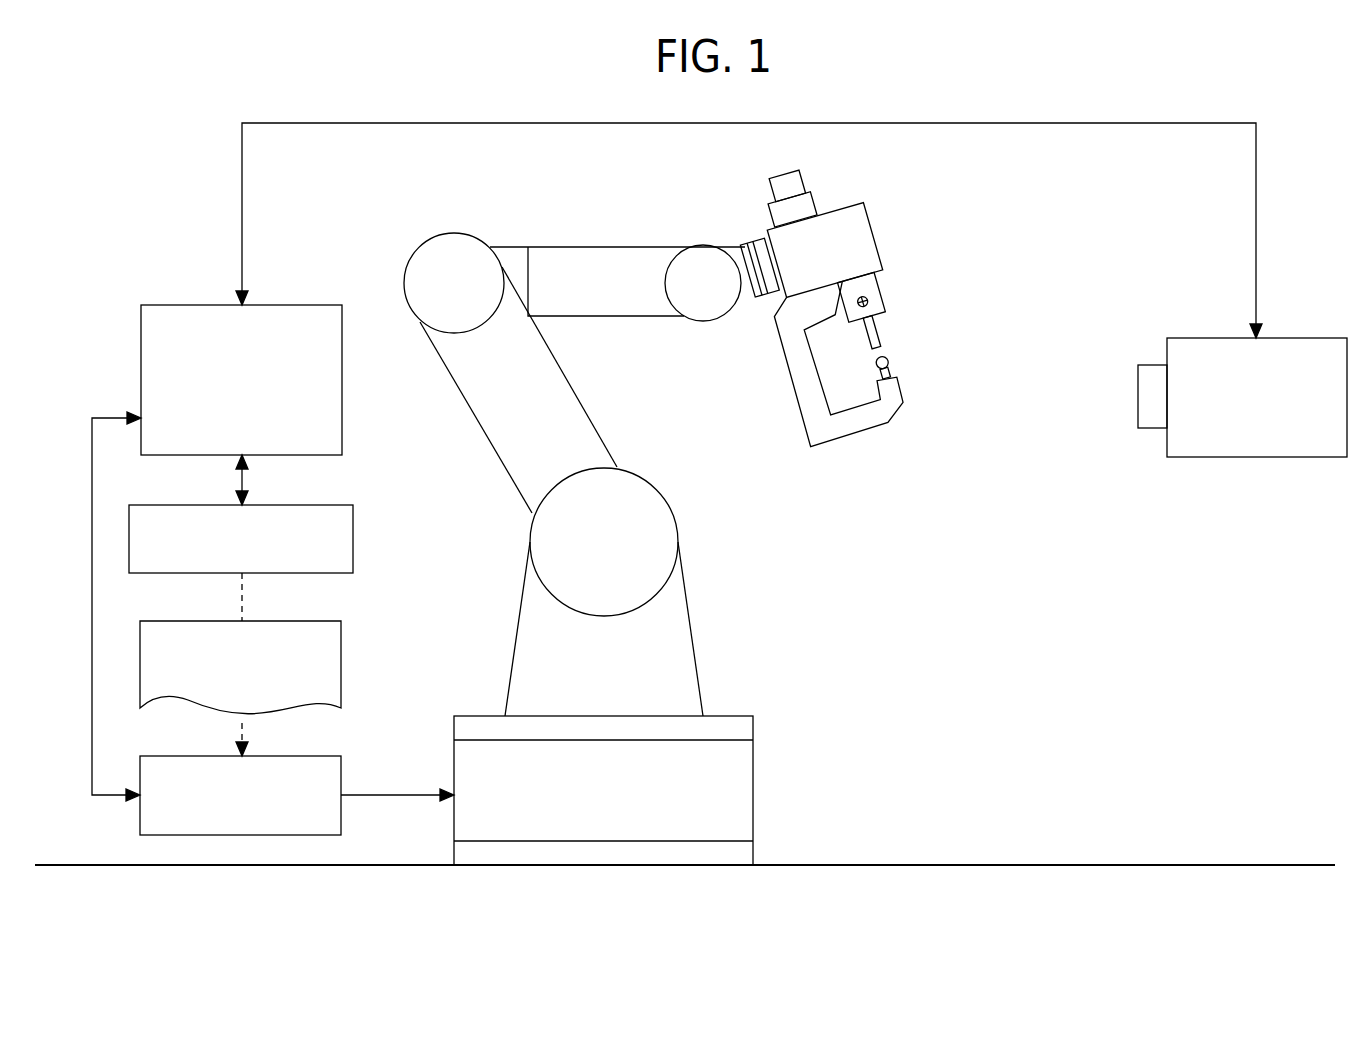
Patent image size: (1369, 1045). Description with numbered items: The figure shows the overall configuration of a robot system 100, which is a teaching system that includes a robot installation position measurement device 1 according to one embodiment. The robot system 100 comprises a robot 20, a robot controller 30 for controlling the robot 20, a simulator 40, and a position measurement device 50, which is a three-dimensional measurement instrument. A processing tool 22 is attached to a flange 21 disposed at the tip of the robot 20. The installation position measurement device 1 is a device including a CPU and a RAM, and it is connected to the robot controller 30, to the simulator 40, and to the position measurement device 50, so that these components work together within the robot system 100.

The robot system 100 is at (136, 152).
The robot installation position measurement device 1 is at (345, 398).
The robot 20 is at (388, 293).
The flange 21 is at (742, 245).
The processing tool 22 is at (884, 238).
The robot controller 30 is at (333, 840).
The simulator 40 is at (359, 543).
The position measurement device 50 is at (1327, 335).